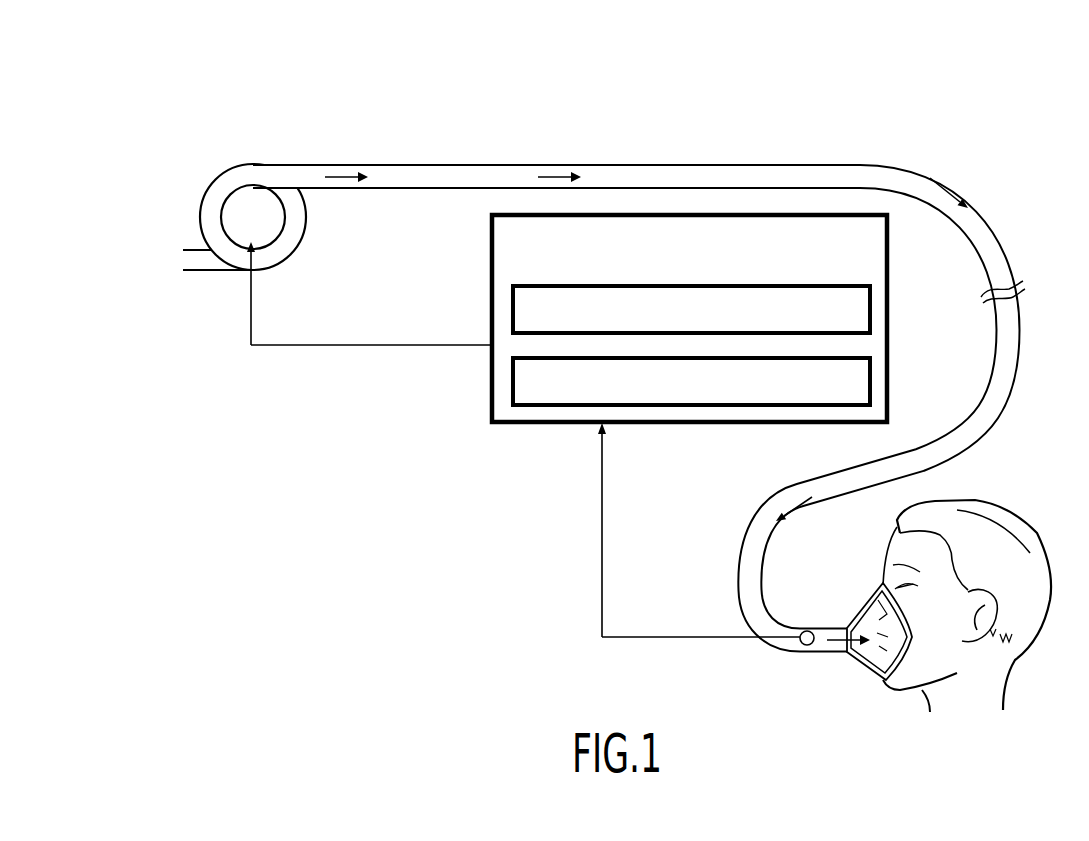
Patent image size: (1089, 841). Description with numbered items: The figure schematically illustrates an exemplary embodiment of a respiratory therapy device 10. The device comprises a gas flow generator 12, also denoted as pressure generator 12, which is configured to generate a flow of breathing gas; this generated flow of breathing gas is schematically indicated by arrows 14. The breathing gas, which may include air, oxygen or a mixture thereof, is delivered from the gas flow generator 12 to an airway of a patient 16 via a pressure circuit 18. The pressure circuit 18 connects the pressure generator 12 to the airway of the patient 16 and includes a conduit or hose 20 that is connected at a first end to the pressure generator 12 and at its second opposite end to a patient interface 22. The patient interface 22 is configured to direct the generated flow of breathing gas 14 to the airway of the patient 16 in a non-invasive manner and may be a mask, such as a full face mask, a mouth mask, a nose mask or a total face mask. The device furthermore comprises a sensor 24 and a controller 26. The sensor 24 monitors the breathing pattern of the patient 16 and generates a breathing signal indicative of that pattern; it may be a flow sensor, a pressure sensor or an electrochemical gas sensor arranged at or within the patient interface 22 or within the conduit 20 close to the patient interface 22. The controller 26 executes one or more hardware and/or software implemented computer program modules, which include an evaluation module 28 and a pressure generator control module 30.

The respiratory therapy device 10 is at (125, 133).
The gas flow generator 12 is at (231, 163).
The flow of breathing gas 14 is at (334, 172).
The patient 16 is at (1012, 507).
The pressure circuit 18 is at (1008, 236).
The conduit or hose 20 is at (928, 174).
The patient interface 22 is at (858, 660).
The sensor 24 is at (805, 648).
The controller 26 is at (703, 318).
The evaluation module 28 is at (513, 384).
The pressure generator control module 30 is at (513, 310).